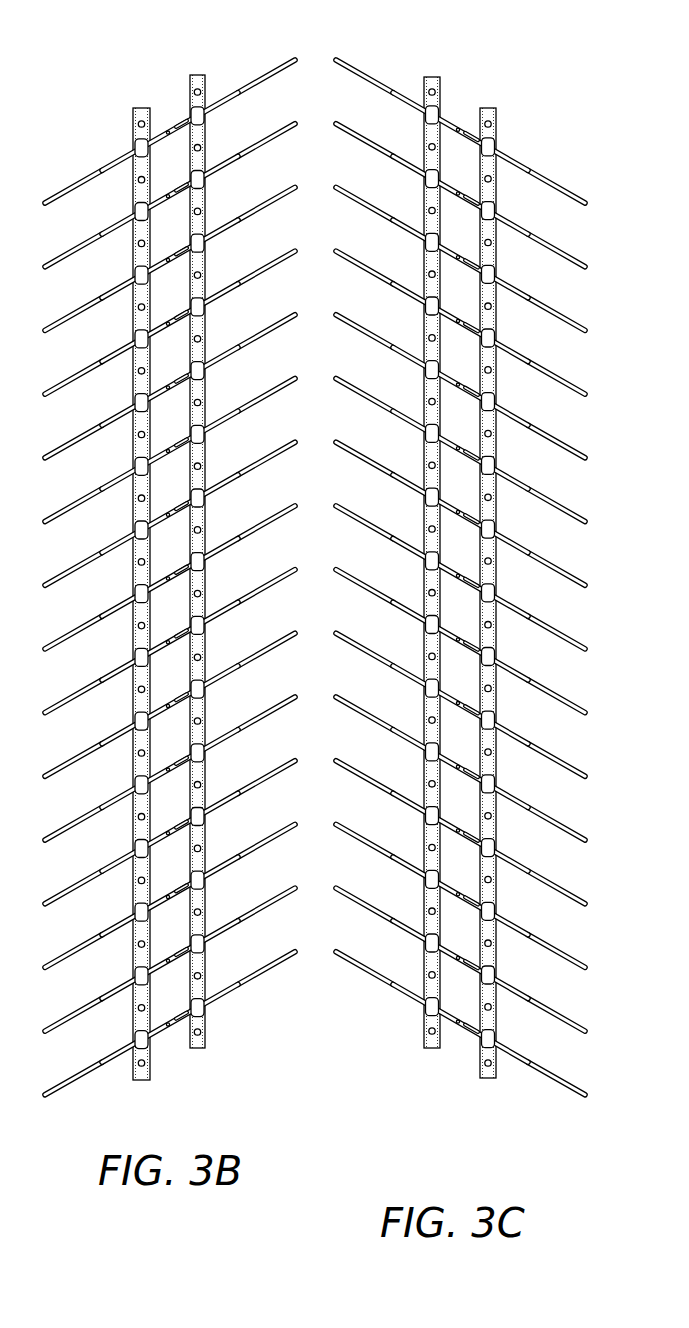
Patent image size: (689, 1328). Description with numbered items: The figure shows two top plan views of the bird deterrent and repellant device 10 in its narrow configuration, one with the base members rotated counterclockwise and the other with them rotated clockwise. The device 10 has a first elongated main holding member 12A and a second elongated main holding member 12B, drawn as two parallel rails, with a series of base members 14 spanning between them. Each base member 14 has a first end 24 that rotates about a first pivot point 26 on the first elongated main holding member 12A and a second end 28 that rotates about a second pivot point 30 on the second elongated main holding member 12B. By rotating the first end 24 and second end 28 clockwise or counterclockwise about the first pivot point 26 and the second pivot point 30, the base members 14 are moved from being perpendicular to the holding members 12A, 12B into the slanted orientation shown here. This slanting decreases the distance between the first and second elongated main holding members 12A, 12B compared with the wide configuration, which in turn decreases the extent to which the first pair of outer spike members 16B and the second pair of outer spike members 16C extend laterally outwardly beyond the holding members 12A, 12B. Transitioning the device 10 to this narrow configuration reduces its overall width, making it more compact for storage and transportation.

In FIG. 3B, the bird deterrent and repellant device 10 is at (108, 72).
In FIG. 3C, the bird deterrent and repellant device 10 is at (403, 54).
In FIG. 3B, the first elongated main holding member 12A is at (143, 1081).
In FIG. 3C, the first elongated main holding member 12A is at (430, 1049).
In FIG. 3B, the second elongated main holding member 12B is at (200, 1049).
In FIG. 3C, the second elongated main holding member 12B is at (484, 1079).
In FIG. 3B, the base member 14 is at (170, 1030).
In FIG. 3C, the base member 14 is at (462, 1030).
In FIG. 3B, the first pair of outer spike members 16B is at (233, 982).
In FIG. 3C, the first pair of outer spike members 16B is at (398, 982).
In FIG. 3B, the second pair of outer spike members 16C is at (263, 976).
In FIG. 3C, the second pair of outer spike members 16C is at (382, 980).
In FIG. 3B, the first end 24 is at (135, 1033).
In FIG. 3C, the first end 24 is at (433, 997).
In FIG. 3B, the first pivot point 26 is at (138, 1056).
In FIG. 3C, the first pivot point 26 is at (428, 1020).
In FIG. 3B, the second end 28 is at (199, 996).
In FIG. 3C, the second end 28 is at (493, 1035).
In FIG. 3B, the second pivot point 30 is at (203, 1030).
In FIG. 3C, the second pivot point 30 is at (492, 1066).